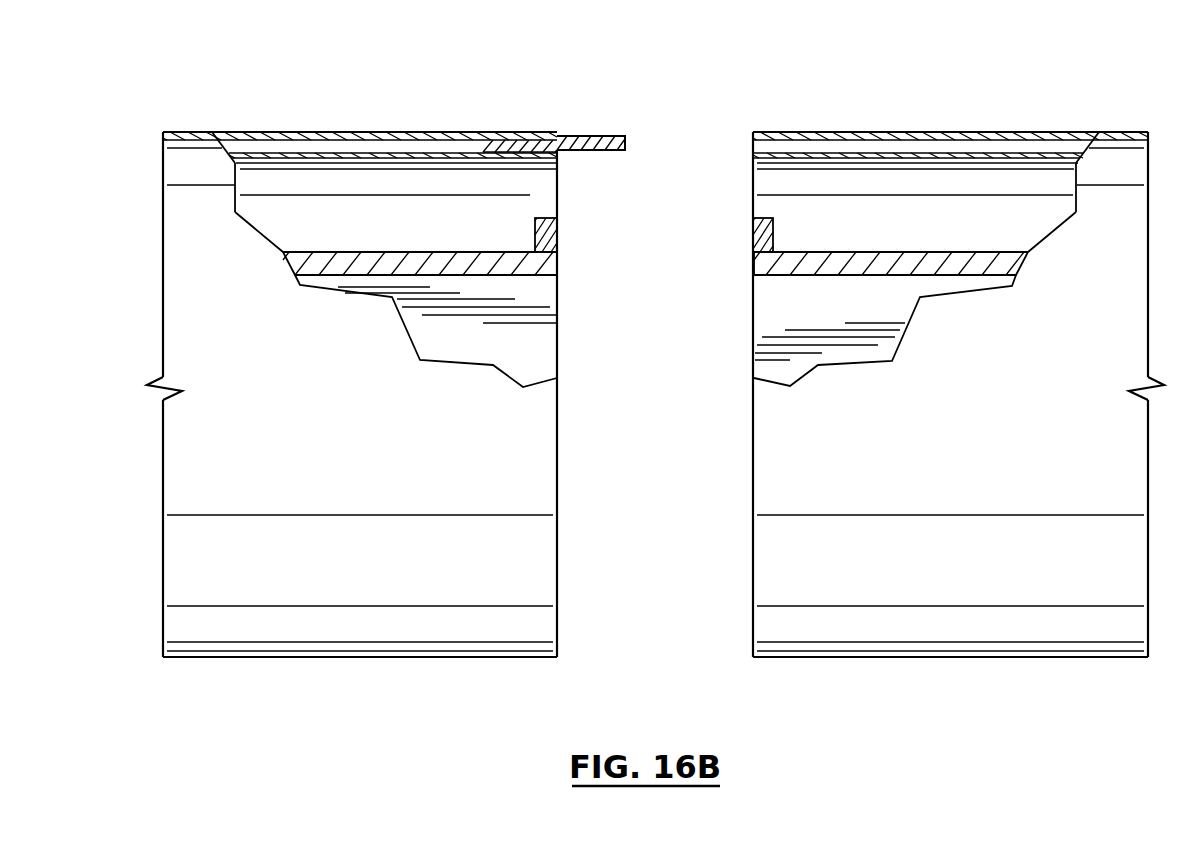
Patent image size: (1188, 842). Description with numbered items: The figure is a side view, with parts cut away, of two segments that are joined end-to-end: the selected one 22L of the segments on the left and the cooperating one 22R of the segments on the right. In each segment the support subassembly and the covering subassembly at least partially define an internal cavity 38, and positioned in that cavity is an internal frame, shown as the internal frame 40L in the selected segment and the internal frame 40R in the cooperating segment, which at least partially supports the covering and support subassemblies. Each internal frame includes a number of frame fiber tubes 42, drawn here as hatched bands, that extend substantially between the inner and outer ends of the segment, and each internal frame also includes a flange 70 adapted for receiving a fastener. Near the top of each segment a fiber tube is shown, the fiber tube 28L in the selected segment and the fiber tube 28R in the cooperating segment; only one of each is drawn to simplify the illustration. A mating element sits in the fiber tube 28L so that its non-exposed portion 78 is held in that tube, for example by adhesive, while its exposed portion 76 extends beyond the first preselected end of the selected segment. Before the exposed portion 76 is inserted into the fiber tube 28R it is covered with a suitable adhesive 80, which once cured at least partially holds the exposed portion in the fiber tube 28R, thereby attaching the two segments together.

The selected one of the segments 22L is at (322, 122).
The cooperating one of the segments 22R is at (949, 123).
The fiber tube 28L is at (420, 143).
The fiber tube 28R is at (1057, 145).
The internal cavity 38 is at (268, 203).
The internal frame 40L is at (380, 252).
The internal frame 40R is at (973, 250).
The frame fiber tubes 42 is at (460, 262).
The flange 70 is at (535, 242).
The exposed portion 76 is at (607, 153).
The non-exposed portion 78 is at (490, 145).
The adhesive 80 is at (593, 135).